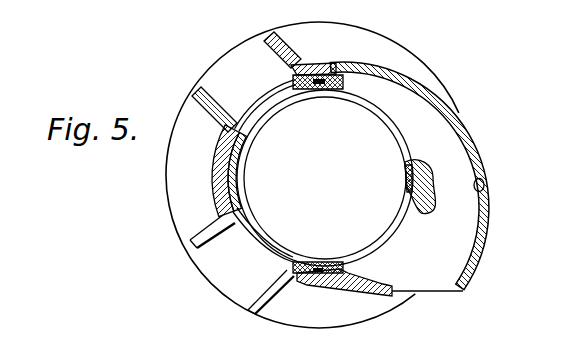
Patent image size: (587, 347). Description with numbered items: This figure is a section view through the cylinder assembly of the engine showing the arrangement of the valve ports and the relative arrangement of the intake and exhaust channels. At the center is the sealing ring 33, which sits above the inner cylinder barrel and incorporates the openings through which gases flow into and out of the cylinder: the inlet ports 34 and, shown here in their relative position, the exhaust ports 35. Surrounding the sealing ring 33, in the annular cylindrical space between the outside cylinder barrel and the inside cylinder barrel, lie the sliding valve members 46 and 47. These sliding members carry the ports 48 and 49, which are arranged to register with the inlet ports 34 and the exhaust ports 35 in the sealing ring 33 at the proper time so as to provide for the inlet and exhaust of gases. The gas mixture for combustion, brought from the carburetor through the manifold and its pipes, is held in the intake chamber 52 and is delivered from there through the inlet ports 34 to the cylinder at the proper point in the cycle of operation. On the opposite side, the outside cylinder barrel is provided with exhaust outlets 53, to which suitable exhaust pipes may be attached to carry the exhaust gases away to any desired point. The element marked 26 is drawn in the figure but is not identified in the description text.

The outer rim 26 is at (428, 50).
The sealing ring 33 is at (322, 87).
The inlet ports 34 is at (402, 200).
The exhaust ports 35 is at (240, 210).
The sliding valve member 46 is at (336, 276).
The sliding valve member 47 is at (306, 276).
The port 48 is at (400, 122).
The port 49 is at (265, 97).
The intake chamber 52 is at (484, 183).
The exhaust outlets 53 is at (203, 90).